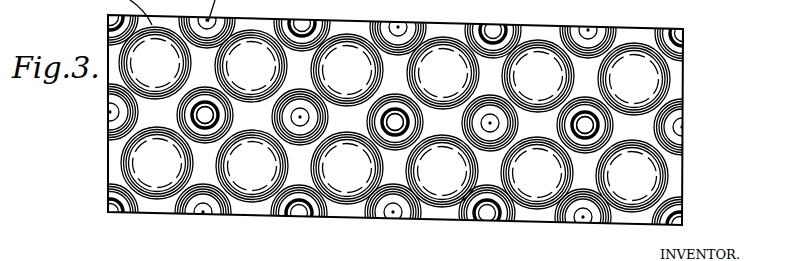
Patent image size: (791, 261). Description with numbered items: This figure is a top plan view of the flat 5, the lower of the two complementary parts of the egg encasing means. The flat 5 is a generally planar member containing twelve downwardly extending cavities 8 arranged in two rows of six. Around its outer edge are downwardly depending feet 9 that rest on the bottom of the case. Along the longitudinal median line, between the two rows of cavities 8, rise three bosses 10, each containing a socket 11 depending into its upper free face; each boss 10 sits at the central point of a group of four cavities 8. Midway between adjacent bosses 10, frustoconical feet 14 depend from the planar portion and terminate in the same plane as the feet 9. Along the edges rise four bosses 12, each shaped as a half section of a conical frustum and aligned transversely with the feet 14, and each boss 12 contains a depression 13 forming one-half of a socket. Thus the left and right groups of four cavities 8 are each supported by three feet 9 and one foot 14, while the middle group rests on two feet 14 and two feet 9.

The flat 5 is at (250, 220).
The cavities 8 is at (394, 117).
The feet 9 is at (110, 118).
The bosses 10 is at (198, 140).
The sockets 11 is at (205, 115).
The bosses 12 is at (328, 217).
The depression 13 is at (292, 217).
The feet 14 is at (300, 117).